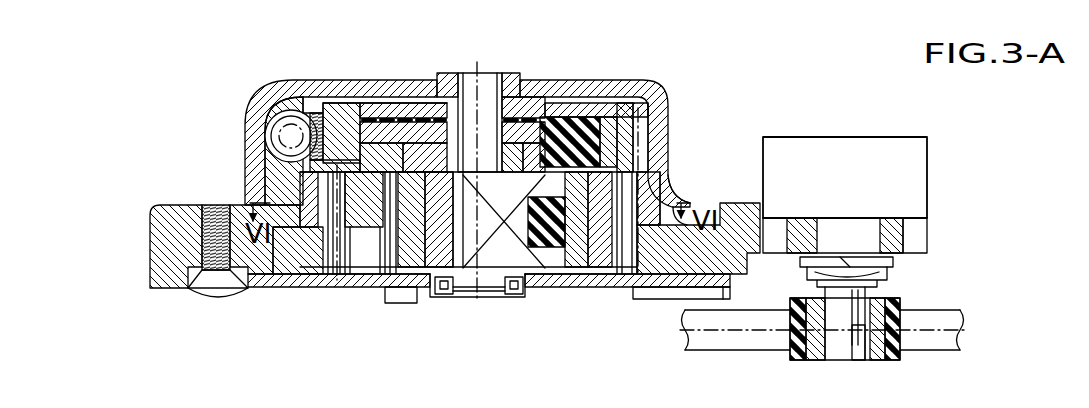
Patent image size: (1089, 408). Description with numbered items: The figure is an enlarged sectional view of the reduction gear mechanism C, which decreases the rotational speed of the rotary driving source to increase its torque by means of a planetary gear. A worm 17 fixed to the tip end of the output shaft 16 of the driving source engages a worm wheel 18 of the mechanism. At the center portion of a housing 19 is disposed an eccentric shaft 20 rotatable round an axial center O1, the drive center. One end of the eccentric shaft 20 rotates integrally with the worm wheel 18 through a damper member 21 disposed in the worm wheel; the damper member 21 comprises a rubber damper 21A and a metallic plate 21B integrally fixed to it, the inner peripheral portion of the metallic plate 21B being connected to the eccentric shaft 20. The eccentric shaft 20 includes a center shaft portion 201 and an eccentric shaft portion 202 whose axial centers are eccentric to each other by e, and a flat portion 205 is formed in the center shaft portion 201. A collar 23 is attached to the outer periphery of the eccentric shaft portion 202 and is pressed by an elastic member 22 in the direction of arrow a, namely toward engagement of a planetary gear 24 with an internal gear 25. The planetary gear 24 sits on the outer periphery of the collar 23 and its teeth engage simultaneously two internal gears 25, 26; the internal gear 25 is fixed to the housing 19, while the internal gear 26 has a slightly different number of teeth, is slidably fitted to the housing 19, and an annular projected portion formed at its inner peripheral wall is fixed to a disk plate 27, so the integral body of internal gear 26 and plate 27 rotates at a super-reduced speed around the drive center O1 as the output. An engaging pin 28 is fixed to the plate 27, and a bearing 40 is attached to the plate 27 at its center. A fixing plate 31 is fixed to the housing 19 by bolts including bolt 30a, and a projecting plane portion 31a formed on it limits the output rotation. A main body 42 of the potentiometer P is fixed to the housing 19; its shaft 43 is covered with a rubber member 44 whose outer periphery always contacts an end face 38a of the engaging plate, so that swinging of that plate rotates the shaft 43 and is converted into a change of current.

The output shaft 16 is at (282, 135).
The worm 17 is at (265, 145).
The worm wheel 18 is at (292, 83).
The housing 19 is at (323, 88).
The eccentric shaft 20 is at (443, 78).
The damper member 21 is at (397, 83).
The rubber damper 21A is at (622, 110).
The metallic plate 21B is at (560, 120).
The elastic member 22 is at (547, 250).
The collar 23 is at (580, 262).
The planetary gear 24 is at (600, 262).
The internal gear 25 is at (680, 172).
The internal gear 26 is at (662, 270).
The disk plate 27 is at (362, 289).
The engaging pin 28 is at (385, 304).
The bolt 30a is at (233, 295).
The fixing plate 31 is at (180, 290).
The projecting plane portion 31a is at (690, 300).
The end face 38a is at (775, 342).
The bearing 40 is at (450, 300).
The main body 42 is at (903, 160).
The shaft 43 is at (862, 295).
The rubber member 44 is at (803, 360).
The center shaft portion 201 is at (503, 78).
The eccentric shaft portion 202 is at (520, 256).
The flat portion 205 is at (455, 85).
The reduction gear mechanism C is at (230, 76).
The potentiometer P is at (838, 135).
The axial center O1 is at (477, 80).
The arrow direction a is at (525, 222).
The eccentricity e is at (477, 292).